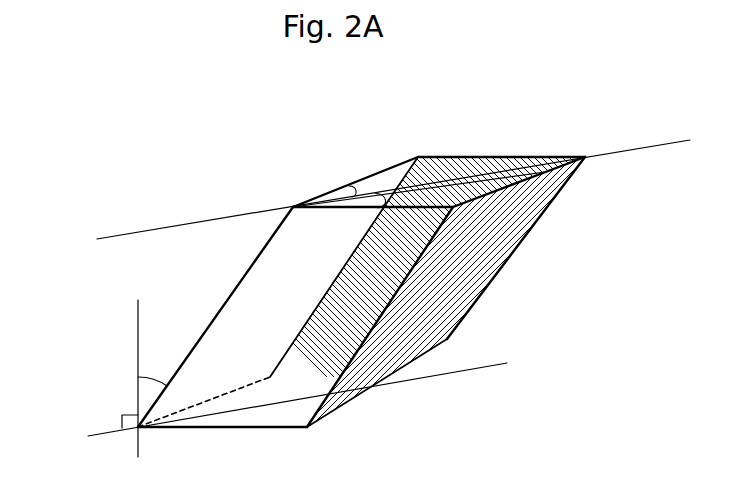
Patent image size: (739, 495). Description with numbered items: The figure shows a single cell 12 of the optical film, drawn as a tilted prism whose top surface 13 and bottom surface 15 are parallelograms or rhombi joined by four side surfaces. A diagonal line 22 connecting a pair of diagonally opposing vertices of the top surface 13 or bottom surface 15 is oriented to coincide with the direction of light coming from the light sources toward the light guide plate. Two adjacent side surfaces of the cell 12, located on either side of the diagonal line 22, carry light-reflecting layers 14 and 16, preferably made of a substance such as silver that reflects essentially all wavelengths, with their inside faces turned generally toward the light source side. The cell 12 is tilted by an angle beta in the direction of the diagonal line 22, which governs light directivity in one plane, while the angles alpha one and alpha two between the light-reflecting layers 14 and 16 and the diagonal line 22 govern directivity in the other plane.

The cell 12 is at (540, 138).
The top surface 13 is at (398, 173).
The light-reflecting layer 14 is at (417, 356).
The bottom surface 15 is at (287, 413).
The light-reflecting layer 16 is at (460, 158).
The diagonal line 22 is at (112, 236).